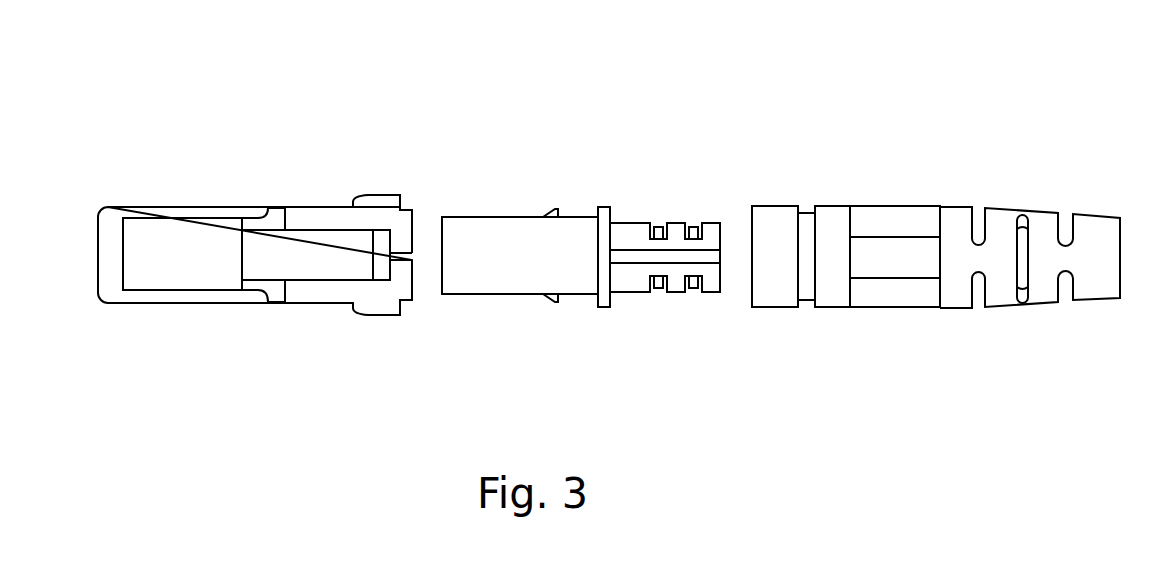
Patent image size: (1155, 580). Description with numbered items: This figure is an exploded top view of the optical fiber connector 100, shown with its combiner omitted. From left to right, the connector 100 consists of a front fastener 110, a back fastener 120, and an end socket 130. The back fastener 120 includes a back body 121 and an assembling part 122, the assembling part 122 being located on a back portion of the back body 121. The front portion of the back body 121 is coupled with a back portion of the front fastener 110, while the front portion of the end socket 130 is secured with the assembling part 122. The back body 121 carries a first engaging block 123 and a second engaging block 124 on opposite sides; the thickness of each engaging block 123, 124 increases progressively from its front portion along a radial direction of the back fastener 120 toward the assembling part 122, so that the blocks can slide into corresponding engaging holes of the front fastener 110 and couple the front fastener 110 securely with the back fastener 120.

The optical fiber connector 100 is at (160, 73).
The front fastener 110 is at (327, 182).
The back fastener 120 is at (588, 117).
The back body 121 is at (465, 228).
The assembling part 122 is at (632, 230).
The first engaging block 123 is at (550, 300).
The second engaging block 124 is at (553, 209).
The end socket 130 is at (937, 323).